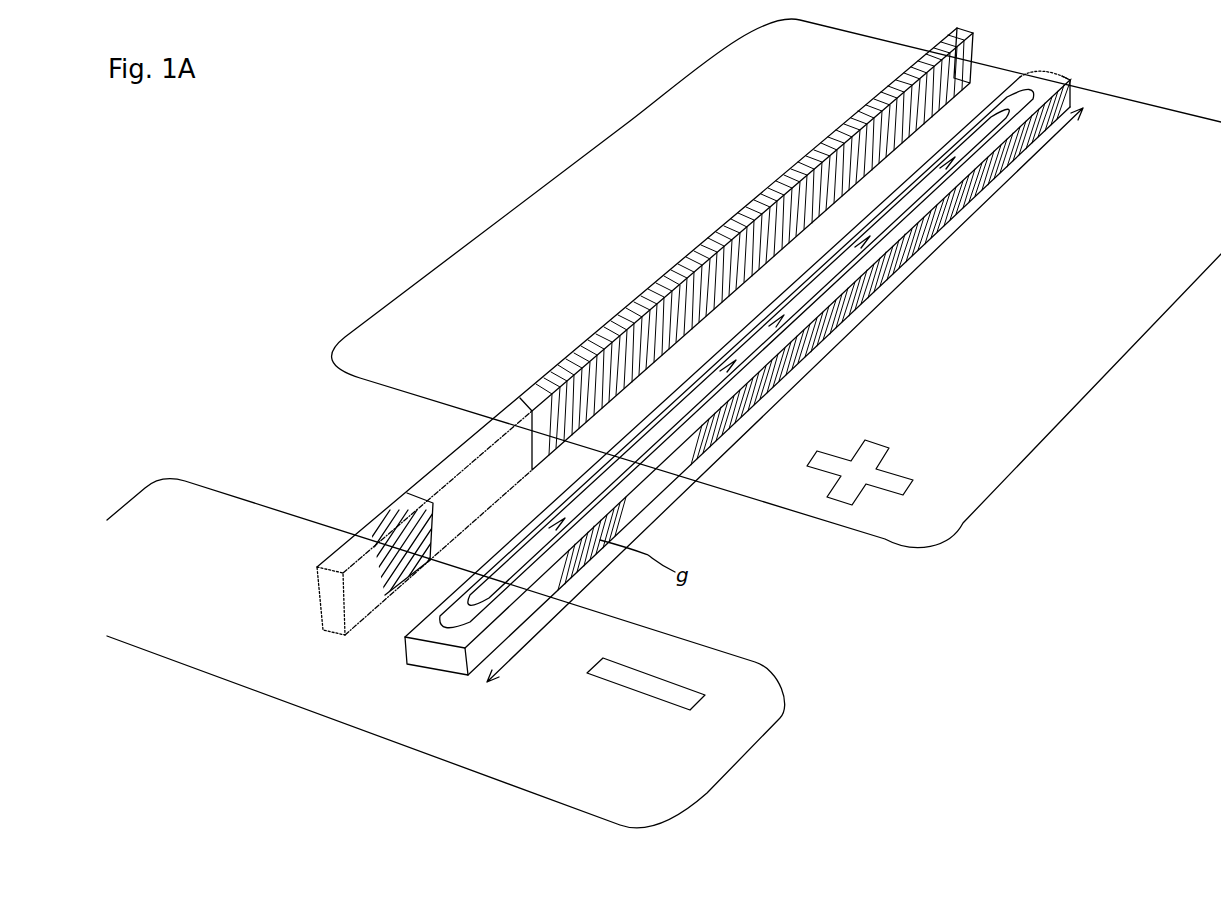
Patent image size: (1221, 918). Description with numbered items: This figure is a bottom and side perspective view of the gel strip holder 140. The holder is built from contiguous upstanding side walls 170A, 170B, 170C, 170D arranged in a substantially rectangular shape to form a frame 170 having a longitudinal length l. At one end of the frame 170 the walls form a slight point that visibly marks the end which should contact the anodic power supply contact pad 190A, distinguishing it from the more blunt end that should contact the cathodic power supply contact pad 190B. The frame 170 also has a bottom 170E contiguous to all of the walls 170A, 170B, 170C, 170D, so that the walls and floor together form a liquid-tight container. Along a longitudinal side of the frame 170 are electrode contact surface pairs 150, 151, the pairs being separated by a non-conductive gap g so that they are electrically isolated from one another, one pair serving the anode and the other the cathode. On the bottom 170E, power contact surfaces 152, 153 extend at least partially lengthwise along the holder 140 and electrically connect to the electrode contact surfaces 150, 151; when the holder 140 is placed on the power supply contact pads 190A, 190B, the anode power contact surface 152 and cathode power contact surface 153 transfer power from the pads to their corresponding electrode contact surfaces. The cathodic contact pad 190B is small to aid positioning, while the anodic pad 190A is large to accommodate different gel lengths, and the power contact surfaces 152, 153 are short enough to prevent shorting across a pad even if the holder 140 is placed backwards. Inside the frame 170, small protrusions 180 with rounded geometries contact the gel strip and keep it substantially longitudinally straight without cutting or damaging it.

The gel strip holder 140 is at (1073, 88).
The electrode contact surface 150 is at (387, 520).
The electrode contact surface 151 is at (920, 236).
The power contact surface for the anode 152 is at (947, 70).
The power contact surface for the cathode 153 is at (411, 527).
The frame 170 is at (405, 655).
The upstanding side wall 170A is at (1060, 76).
The upstanding side wall 170B is at (1018, 77).
The upstanding side wall 170C is at (442, 655).
The upstanding side wall 170D is at (645, 516).
The bottom 170E is at (760, 323).
The protrusions 180 is at (947, 168).
The anodic power supply contact pad 190A is at (943, 507).
The cathodic power supply contact pad 190B is at (675, 793).